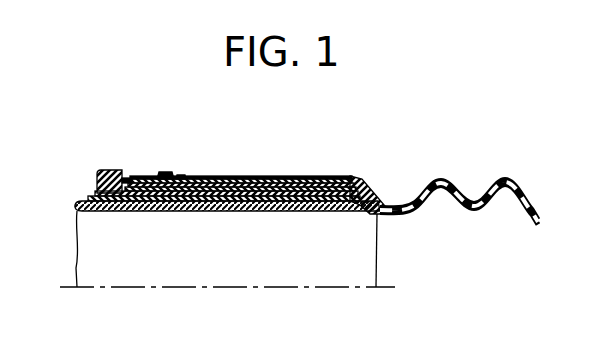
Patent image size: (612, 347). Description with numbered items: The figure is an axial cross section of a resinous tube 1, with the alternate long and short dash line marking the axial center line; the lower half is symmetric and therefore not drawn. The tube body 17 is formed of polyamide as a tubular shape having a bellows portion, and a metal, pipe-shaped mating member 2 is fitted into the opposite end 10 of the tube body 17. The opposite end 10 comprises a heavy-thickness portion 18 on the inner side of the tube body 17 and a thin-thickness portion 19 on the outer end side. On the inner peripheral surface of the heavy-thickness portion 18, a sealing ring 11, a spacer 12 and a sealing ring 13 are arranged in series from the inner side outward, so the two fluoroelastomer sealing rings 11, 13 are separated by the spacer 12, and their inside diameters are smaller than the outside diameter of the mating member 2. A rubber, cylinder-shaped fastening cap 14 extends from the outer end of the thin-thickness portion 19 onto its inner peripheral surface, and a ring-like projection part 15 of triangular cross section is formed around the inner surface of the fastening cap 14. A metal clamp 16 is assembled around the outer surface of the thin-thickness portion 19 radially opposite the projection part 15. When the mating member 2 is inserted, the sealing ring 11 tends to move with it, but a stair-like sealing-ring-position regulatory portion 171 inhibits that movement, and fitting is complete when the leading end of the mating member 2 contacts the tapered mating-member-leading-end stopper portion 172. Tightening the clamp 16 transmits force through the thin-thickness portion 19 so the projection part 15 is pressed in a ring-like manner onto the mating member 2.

The resinous tube 1 is at (380, 154).
The mating member 2 is at (78, 202).
The opposite end 10 is at (236, 219).
The sealing ring 11 is at (317, 181).
The spacer 12 is at (284, 185).
The sealing ring 13 is at (250, 189).
The fastening cap 14 is at (138, 201).
The projection part 15 is at (190, 194).
The clamp 16 is at (181, 185).
The tube body 17 is at (463, 166).
The heavy-thickness portion 18 is at (341, 177).
The thin-thickness portion 19 is at (192, 180).
The sealing-ring-position regulatory portion 171 is at (362, 178).
The mating-member-leading-end stopper portion 172 is at (383, 200).